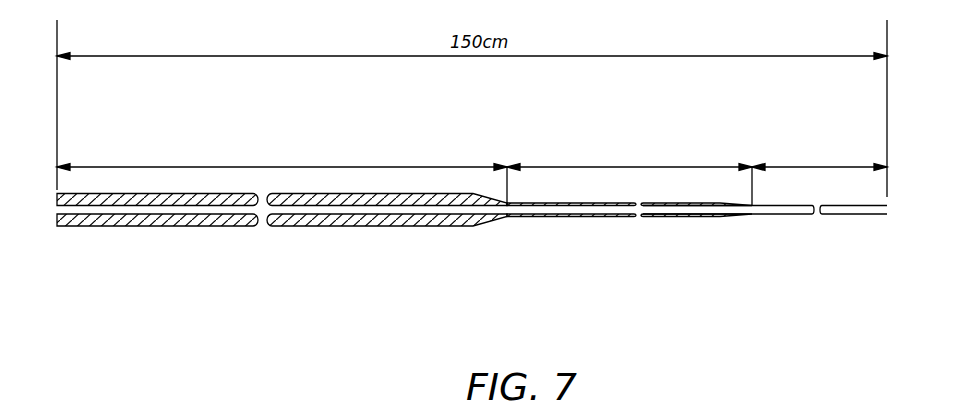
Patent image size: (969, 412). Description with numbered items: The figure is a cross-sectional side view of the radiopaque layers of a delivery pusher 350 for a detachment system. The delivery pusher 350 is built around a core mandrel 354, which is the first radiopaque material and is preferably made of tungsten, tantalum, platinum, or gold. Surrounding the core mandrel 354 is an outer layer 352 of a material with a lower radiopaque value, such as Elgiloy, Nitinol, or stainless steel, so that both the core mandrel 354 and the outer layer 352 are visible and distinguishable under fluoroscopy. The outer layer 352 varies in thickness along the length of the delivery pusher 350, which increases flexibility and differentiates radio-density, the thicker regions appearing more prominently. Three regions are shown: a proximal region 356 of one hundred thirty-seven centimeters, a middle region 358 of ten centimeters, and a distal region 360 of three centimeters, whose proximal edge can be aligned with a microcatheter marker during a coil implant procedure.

The delivery pusher 350 is at (472, 292).
The outer layer 352 is at (157, 228).
The core mandrel 354 is at (330, 228).
The proximal region 356 is at (200, 164).
The middle region 358 is at (565, 164).
The distal region 360 is at (793, 164).